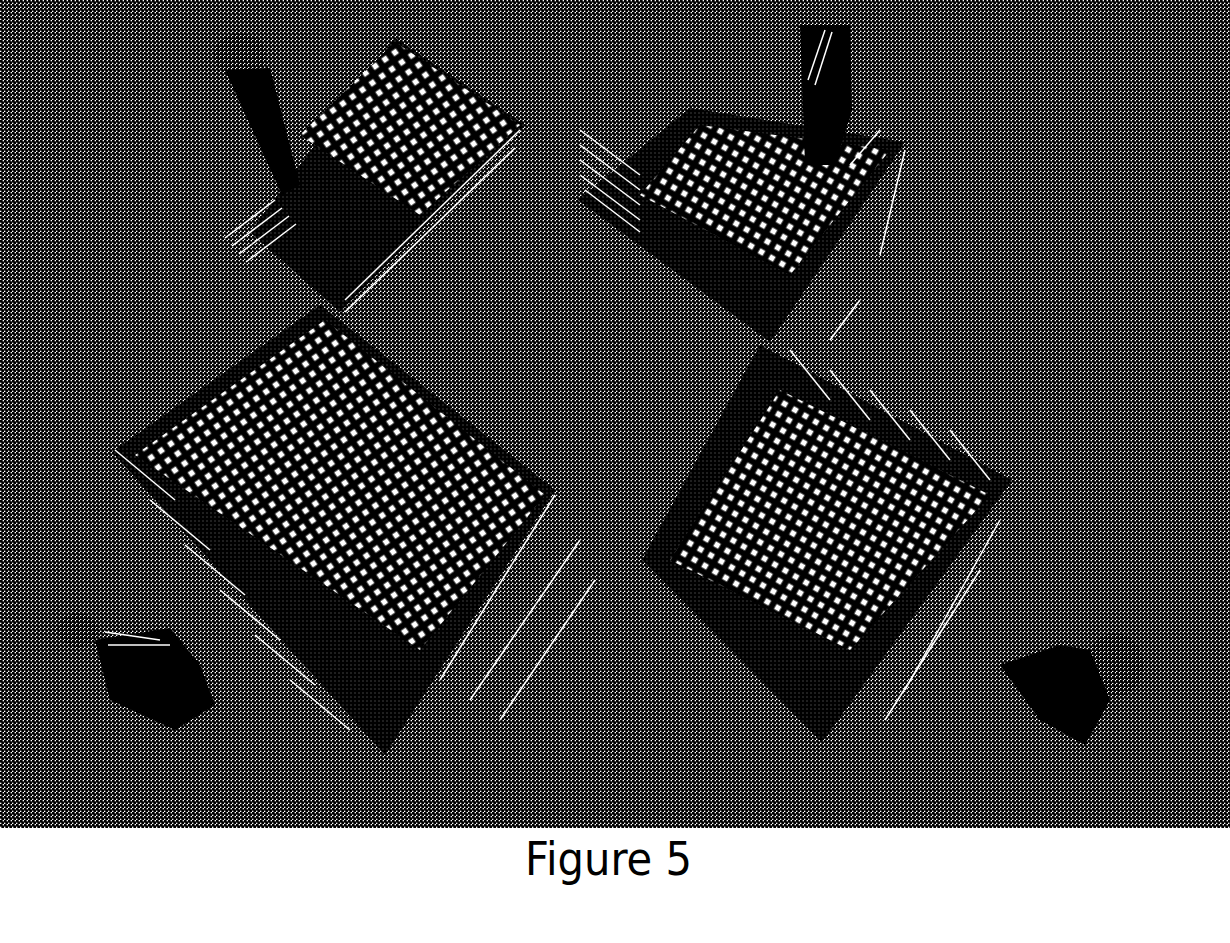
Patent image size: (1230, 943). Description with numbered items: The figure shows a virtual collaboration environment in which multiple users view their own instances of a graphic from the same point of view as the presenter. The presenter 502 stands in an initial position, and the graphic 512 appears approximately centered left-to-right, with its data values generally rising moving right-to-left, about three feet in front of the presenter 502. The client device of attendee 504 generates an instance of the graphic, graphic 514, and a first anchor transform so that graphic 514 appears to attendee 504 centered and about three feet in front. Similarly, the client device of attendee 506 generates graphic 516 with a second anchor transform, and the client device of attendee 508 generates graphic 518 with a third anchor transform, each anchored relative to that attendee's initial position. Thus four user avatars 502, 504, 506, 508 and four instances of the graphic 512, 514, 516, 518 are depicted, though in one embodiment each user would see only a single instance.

The presenter 502 is at (200, 694).
The attendee 504 is at (250, 133).
The attendee 506 is at (820, 123).
The attendee 508 is at (1070, 689).
The graphic 512 is at (480, 427).
The graphic 514 is at (495, 216).
The graphic 516 is at (637, 240).
The graphic 518 is at (740, 428).